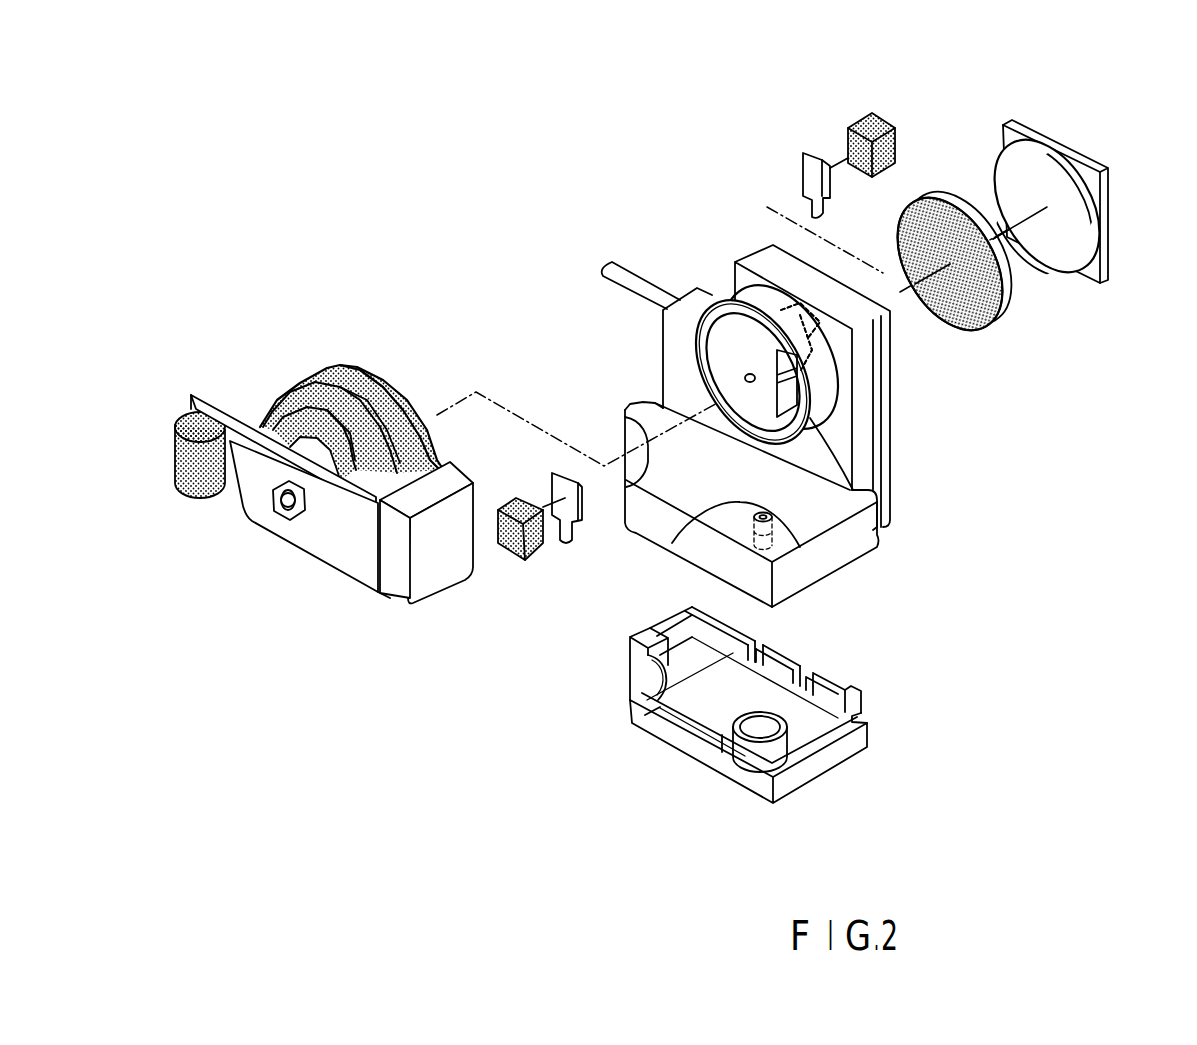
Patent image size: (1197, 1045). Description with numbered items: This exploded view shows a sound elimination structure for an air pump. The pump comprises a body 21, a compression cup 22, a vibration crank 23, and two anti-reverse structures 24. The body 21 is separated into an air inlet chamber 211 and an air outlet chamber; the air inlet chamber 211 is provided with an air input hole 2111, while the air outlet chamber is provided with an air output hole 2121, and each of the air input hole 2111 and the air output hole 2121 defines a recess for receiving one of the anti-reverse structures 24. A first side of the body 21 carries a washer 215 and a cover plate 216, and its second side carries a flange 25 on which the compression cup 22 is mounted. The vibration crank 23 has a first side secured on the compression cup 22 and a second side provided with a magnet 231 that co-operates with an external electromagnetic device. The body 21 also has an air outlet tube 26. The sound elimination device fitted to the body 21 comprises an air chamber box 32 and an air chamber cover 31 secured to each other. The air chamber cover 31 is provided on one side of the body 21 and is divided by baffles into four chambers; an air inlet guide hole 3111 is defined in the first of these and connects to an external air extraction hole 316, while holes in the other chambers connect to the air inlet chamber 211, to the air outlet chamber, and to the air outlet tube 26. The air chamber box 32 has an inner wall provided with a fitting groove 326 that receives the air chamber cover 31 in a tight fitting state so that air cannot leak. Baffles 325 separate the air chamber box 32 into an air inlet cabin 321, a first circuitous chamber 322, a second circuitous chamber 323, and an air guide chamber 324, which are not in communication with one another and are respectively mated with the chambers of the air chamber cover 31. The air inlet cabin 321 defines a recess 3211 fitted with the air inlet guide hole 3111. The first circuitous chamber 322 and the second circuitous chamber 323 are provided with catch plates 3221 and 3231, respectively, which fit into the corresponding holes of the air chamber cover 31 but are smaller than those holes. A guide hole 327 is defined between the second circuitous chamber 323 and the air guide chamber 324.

The body 21 is at (776, 411).
The air inlet chamber 211 is at (818, 375).
The air input hole 2111 is at (880, 530).
The air output hole 2121 is at (748, 378).
The compression cup 22 is at (365, 366).
The vibration crank 23 is at (333, 550).
The magnet 231 is at (437, 583).
The anti-reverse structure 24 is at (545, 555).
The flange 25 is at (738, 310).
The air outlet tube 26 is at (630, 272).
The washer 215 is at (996, 316).
The cover plate 216 is at (1110, 250).
The air chamber cover 31 is at (762, 530).
The air inlet guide hole 3111 is at (772, 522).
The external air extraction hole 316 is at (688, 538).
The air chamber box 32 is at (781, 743).
The air inlet cabin 321 is at (795, 750).
The recess 3211 is at (758, 737).
The first circuitous chamber 322 is at (828, 731).
The catch plate 3221 is at (850, 690).
The second circuitous chamber 323 is at (697, 723).
The catch plate 3231 is at (777, 645).
The air guide chamber 324 is at (652, 684).
The baffles 325 is at (725, 737).
The fitting groove 326 is at (855, 713).
The guide hole 327 is at (647, 717).